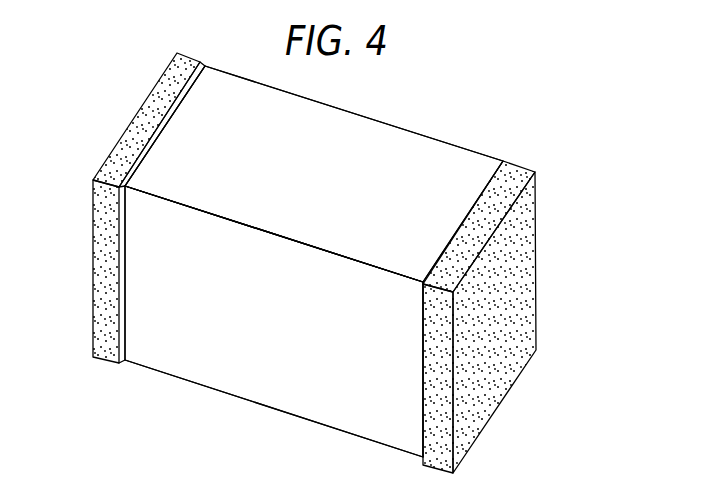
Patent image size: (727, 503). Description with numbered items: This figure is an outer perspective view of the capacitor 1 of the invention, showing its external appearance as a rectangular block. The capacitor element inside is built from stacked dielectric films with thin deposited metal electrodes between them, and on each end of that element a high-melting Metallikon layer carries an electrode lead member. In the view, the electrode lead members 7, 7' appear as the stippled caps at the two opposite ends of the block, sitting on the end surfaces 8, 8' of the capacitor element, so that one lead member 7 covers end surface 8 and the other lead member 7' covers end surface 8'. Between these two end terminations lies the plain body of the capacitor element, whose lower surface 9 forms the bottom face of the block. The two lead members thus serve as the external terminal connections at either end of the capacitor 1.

The capacitor 1 is at (457, 138).
The electrode lead member 7 is at (130, 120).
The end surface 8 is at (90, 271).
The electrode lead member 7' is at (508, 317).
The end surface 8' is at (509, 378).
The lower surface 9 is at (202, 370).